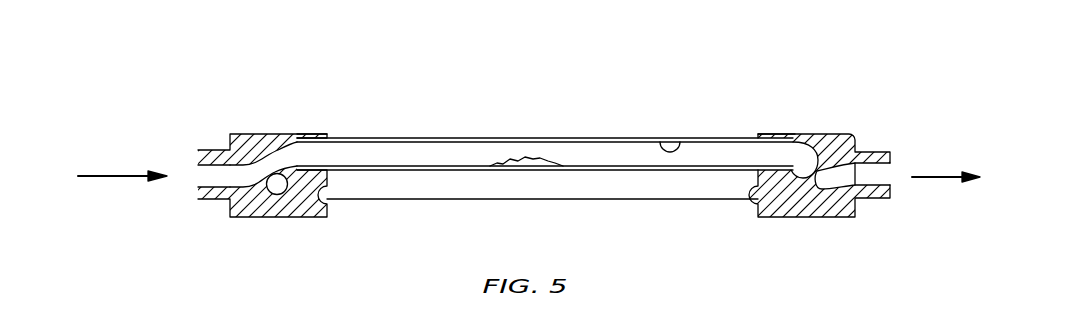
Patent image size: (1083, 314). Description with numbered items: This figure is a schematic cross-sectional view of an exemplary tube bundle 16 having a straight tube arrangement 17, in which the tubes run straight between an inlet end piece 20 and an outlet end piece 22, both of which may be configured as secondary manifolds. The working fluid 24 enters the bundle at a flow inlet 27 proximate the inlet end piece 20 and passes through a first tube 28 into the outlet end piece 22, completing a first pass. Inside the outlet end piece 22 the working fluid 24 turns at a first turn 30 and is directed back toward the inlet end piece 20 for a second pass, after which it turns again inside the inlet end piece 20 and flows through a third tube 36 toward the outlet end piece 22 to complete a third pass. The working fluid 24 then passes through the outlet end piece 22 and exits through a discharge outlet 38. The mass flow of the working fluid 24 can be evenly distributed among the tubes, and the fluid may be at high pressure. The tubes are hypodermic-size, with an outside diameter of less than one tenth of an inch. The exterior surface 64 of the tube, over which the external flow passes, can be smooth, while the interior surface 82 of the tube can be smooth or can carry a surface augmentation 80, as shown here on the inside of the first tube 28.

The tube bundle 16 is at (558, 118).
The straight tube arrangement 17 is at (393, 90).
The inlet end piece 20 is at (255, 133).
The outlet end piece 22 is at (840, 134).
The working fluid 24 is at (123, 176).
The flow inlet 27 is at (191, 182).
The first tube 28 is at (368, 137).
The first turn 30 is at (807, 150).
The third tube 36 is at (556, 200).
The discharge outlet 38 is at (893, 170).
The exterior surface 64 is at (445, 137).
The surface augmentation 80 is at (532, 155).
The interior surface 82 is at (665, 137).